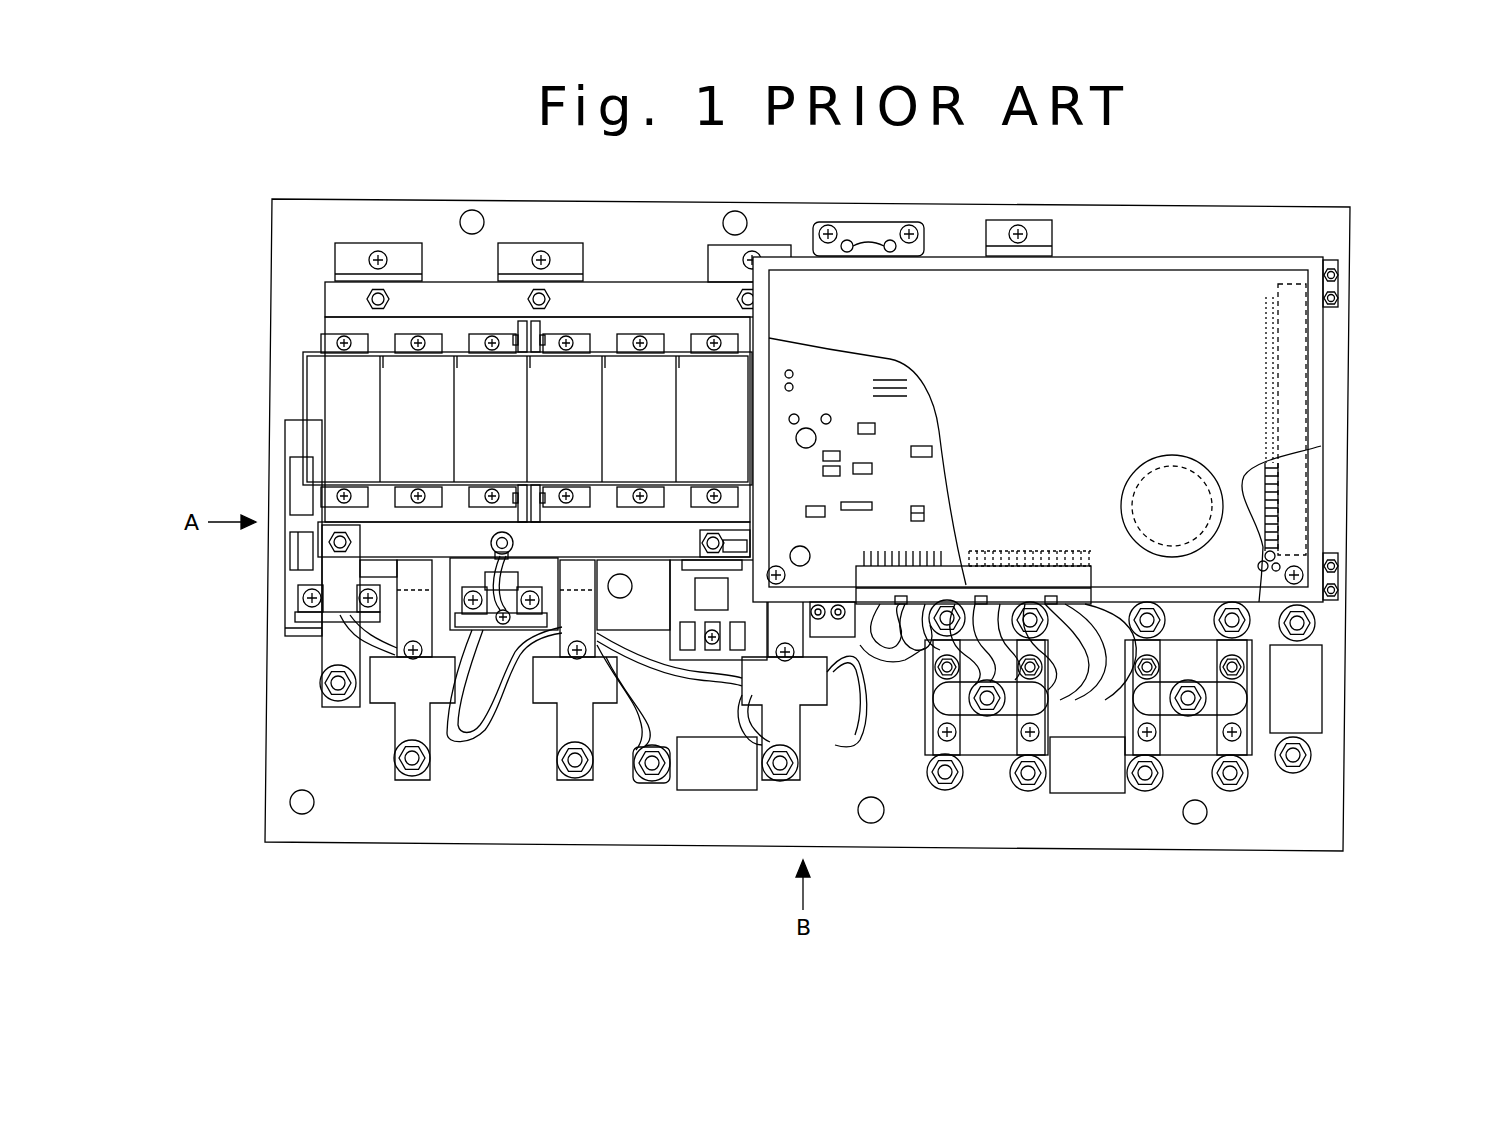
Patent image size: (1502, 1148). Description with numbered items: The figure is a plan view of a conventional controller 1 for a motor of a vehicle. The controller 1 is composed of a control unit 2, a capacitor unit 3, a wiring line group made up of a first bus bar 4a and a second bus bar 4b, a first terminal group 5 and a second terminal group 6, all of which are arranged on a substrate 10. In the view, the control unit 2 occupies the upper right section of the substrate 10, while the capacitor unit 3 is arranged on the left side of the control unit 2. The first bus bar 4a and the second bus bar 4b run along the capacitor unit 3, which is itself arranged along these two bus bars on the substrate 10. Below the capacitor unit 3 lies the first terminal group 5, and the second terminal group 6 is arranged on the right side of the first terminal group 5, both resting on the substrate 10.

The controller 1 is at (834, 526).
The substrate 10 is at (1257, 225).
The control unit 2 is at (1220, 393).
The capacitor unit 3 is at (323, 400).
The first bus bar 4a is at (323, 298).
The second bus bar 4b is at (337, 572).
The first terminal group 5 is at (472, 818).
The second terminal group 6 is at (1093, 825).